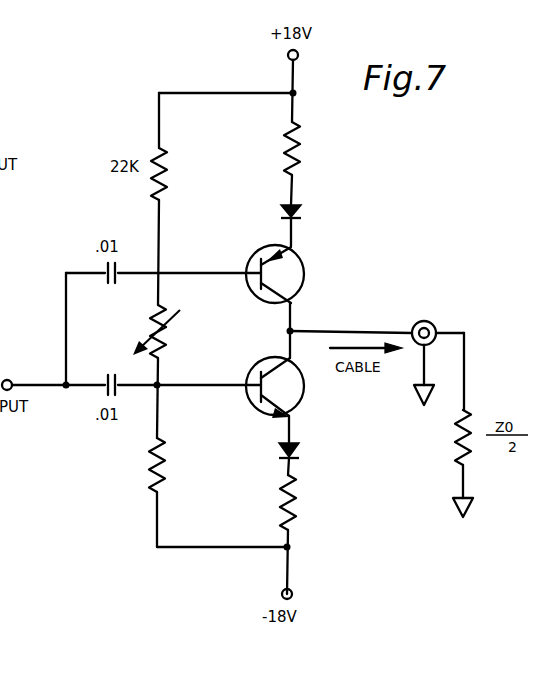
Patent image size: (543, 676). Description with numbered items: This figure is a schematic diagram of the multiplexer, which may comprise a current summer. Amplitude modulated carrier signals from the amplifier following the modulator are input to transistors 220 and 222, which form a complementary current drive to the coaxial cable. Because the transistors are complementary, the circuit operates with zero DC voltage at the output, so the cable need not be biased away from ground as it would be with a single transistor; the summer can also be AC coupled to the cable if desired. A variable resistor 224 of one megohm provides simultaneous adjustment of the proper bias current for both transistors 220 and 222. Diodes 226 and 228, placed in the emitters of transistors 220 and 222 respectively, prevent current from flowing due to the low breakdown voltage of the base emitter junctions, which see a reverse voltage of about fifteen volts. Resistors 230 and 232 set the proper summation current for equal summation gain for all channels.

The transistor 220 is at (302, 278).
The transistor 222 is at (304, 388).
The variable resistor 224 is at (162, 331).
The diode 226 is at (303, 212).
The diode 228 is at (300, 450).
The resistor 230 is at (302, 148).
The resistor 232 is at (292, 505).